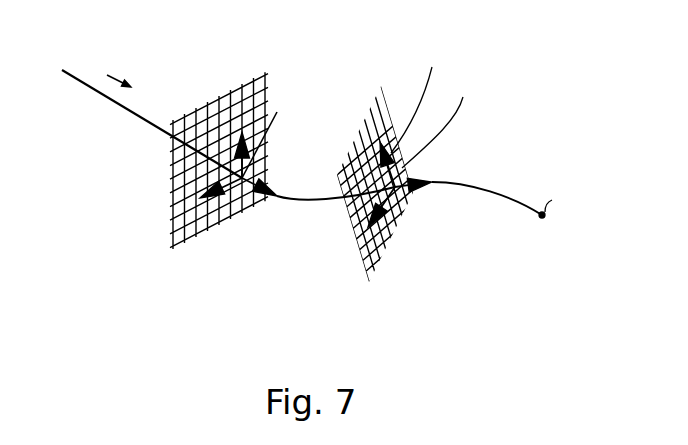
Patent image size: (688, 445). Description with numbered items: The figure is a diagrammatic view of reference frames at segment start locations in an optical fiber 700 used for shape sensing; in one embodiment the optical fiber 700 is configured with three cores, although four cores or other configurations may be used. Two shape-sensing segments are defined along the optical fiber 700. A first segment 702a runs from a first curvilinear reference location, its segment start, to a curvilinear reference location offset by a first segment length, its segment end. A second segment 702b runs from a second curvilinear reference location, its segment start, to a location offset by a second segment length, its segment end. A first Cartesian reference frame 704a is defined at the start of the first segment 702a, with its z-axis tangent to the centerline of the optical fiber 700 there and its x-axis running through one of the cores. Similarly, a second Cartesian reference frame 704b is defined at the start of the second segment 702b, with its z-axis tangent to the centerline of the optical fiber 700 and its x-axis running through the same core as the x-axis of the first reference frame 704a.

The optical fiber 700 is at (130, 108).
The first segment 702a is at (312, 220).
The second segment 702b is at (475, 175).
The first Cartesian reference frame 704a is at (146, 194).
The second Cartesian reference frame 704b is at (399, 261).